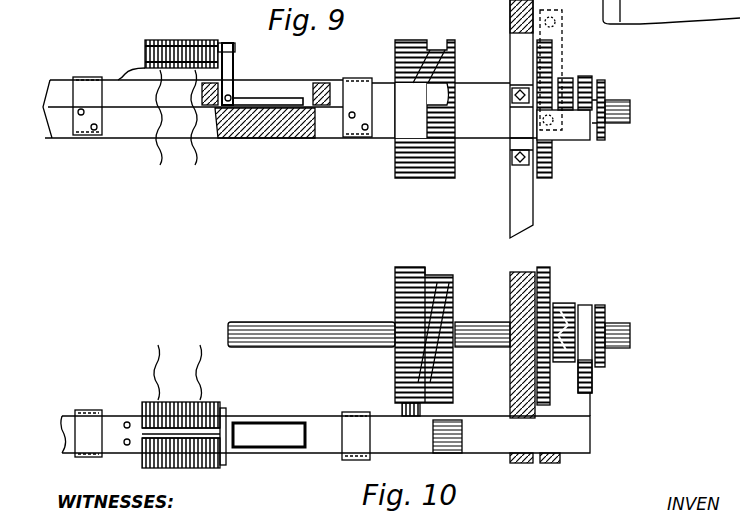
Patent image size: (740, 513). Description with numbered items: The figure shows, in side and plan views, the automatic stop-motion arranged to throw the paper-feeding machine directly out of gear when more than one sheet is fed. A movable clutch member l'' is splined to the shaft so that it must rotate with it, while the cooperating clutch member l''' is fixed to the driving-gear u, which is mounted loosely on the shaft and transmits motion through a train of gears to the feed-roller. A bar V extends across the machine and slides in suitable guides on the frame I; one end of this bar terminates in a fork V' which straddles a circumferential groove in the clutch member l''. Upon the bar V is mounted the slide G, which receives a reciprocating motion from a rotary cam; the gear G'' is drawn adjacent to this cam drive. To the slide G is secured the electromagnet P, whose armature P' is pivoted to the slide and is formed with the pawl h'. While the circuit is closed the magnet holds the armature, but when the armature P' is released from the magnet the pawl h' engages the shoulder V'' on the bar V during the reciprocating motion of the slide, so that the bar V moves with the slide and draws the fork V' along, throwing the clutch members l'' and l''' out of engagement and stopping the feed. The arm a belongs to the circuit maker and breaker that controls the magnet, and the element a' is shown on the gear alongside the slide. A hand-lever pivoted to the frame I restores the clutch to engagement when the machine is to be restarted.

In FIG. 9, the electromagnet P is at (168, 46).
In FIG. 10, the electromagnet P is at (184, 421).
In FIG. 9, the armature P' is at (229, 60).
In FIG. 9, the pawl h' is at (268, 73).
In FIG. 10, the pawl h' is at (269, 419).
In FIG. 9, the shoulder V'' is at (310, 70).
In FIG. 9, the arm a is at (347, 86).
In FIG. 9, the gear a' is at (425, 91).
In FIG. 9, the bar V is at (290, 109).
In FIG. 10, the bar V is at (325, 423).
In FIG. 9, the frame I is at (533, 205).
In FIG. 10, the frame I is at (510, 386).
In FIG. 9, the driving-gear u is at (552, 162).
In FIG. 10, the driving-gear u is at (548, 280).
In FIG. 9, the clutch member l''' is at (571, 63).
In FIG. 10, the clutch member l''' is at (564, 318).
In FIG. 9, the movable clutch member l'' is at (585, 76).
In FIG. 10, the movable clutch member l'' is at (591, 334).
In FIG. 9, the fork V' is at (611, 92).
In FIG. 10, the fork V' is at (614, 344).
In FIG. 10, the slide G is at (370, 436).
In FIG. 10, the gear wheel G'' is at (429, 328).